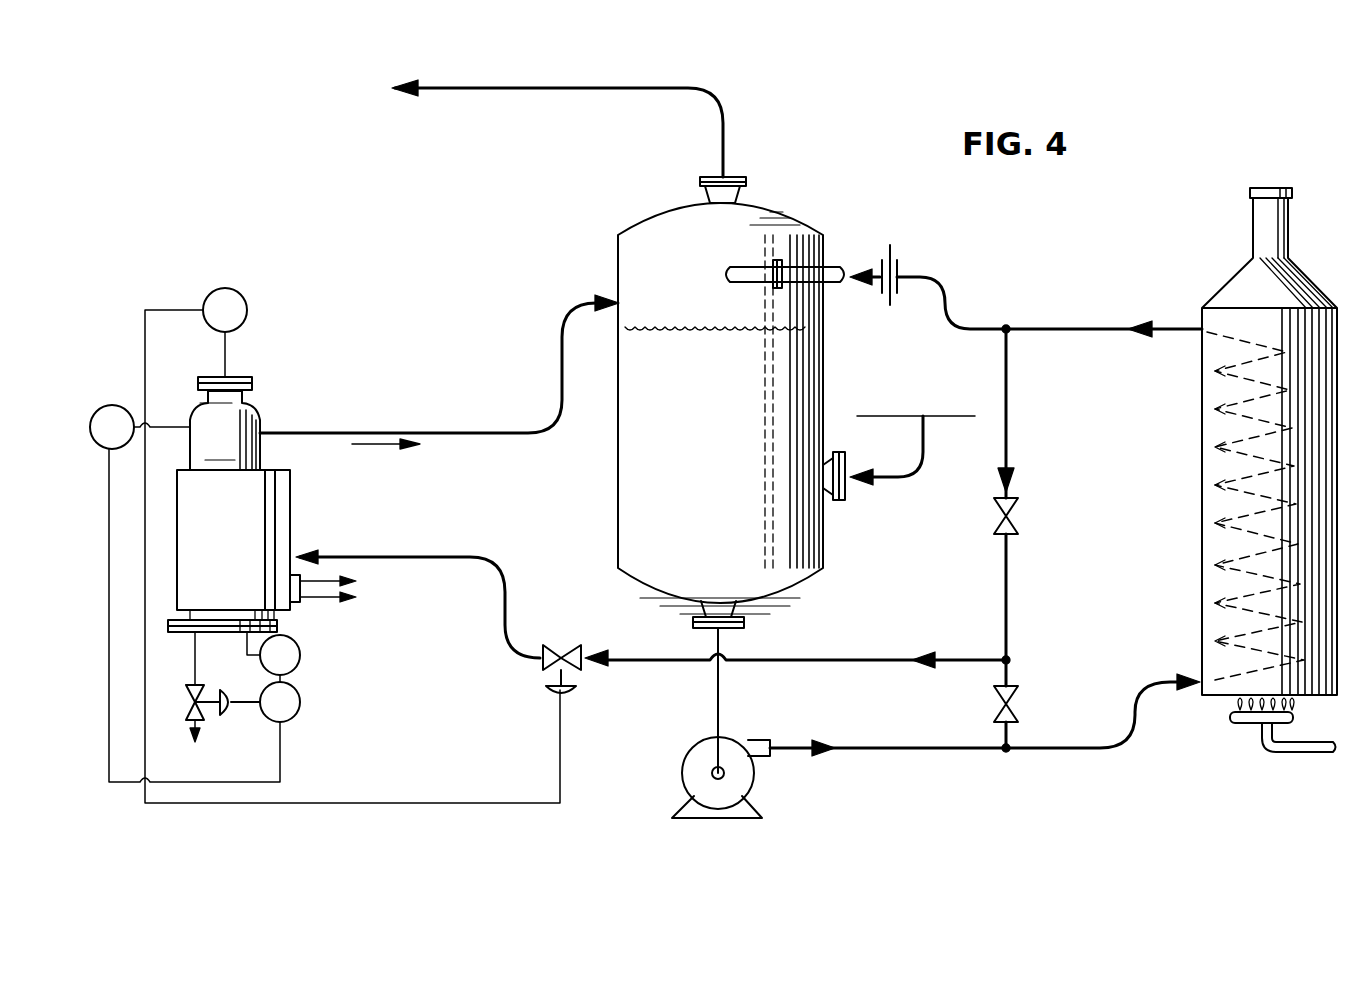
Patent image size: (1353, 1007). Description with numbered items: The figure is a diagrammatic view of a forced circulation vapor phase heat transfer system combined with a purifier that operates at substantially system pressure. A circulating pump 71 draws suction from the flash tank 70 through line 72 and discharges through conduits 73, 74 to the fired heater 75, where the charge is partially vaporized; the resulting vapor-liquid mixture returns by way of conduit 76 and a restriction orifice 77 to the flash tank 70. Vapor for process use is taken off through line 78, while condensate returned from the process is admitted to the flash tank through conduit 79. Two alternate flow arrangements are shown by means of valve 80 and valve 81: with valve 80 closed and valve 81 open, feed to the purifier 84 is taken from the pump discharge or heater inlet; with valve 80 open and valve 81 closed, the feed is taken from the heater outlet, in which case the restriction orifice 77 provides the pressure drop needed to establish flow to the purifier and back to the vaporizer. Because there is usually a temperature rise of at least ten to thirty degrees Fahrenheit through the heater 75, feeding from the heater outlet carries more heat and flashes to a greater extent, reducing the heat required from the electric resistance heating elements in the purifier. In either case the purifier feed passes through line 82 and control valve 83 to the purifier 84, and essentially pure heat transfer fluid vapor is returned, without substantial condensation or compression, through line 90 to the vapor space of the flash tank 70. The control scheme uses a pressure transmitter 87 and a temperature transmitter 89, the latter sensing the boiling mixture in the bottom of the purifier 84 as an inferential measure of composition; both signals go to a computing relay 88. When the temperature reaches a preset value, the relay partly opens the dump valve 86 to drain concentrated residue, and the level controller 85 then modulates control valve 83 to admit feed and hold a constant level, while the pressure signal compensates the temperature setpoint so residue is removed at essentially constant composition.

The flash tank 70 is at (731, 402).
The circulating pump 71 is at (745, 782).
The line 72 is at (722, 700).
The conduit 73 is at (925, 748).
The conduit 74 is at (1052, 748).
The fired heater 75 is at (1208, 630).
The conduit 76 is at (1084, 329).
The restriction orifice 77 is at (898, 270).
The line 78 is at (568, 88).
The conduit 79 is at (882, 480).
The valve 80 is at (1018, 506).
The valve 81 is at (1018, 698).
The line 82 is at (785, 660).
The control valve 83 is at (562, 646).
The purifier 84 is at (253, 405).
The level controller 85 is at (228, 288).
The dump valve 86 is at (205, 720).
The pressure transmitter 87 is at (125, 405).
The computing relay 88 is at (299, 708).
The temperature transmitter 89 is at (301, 655).
The line 90 is at (455, 433).